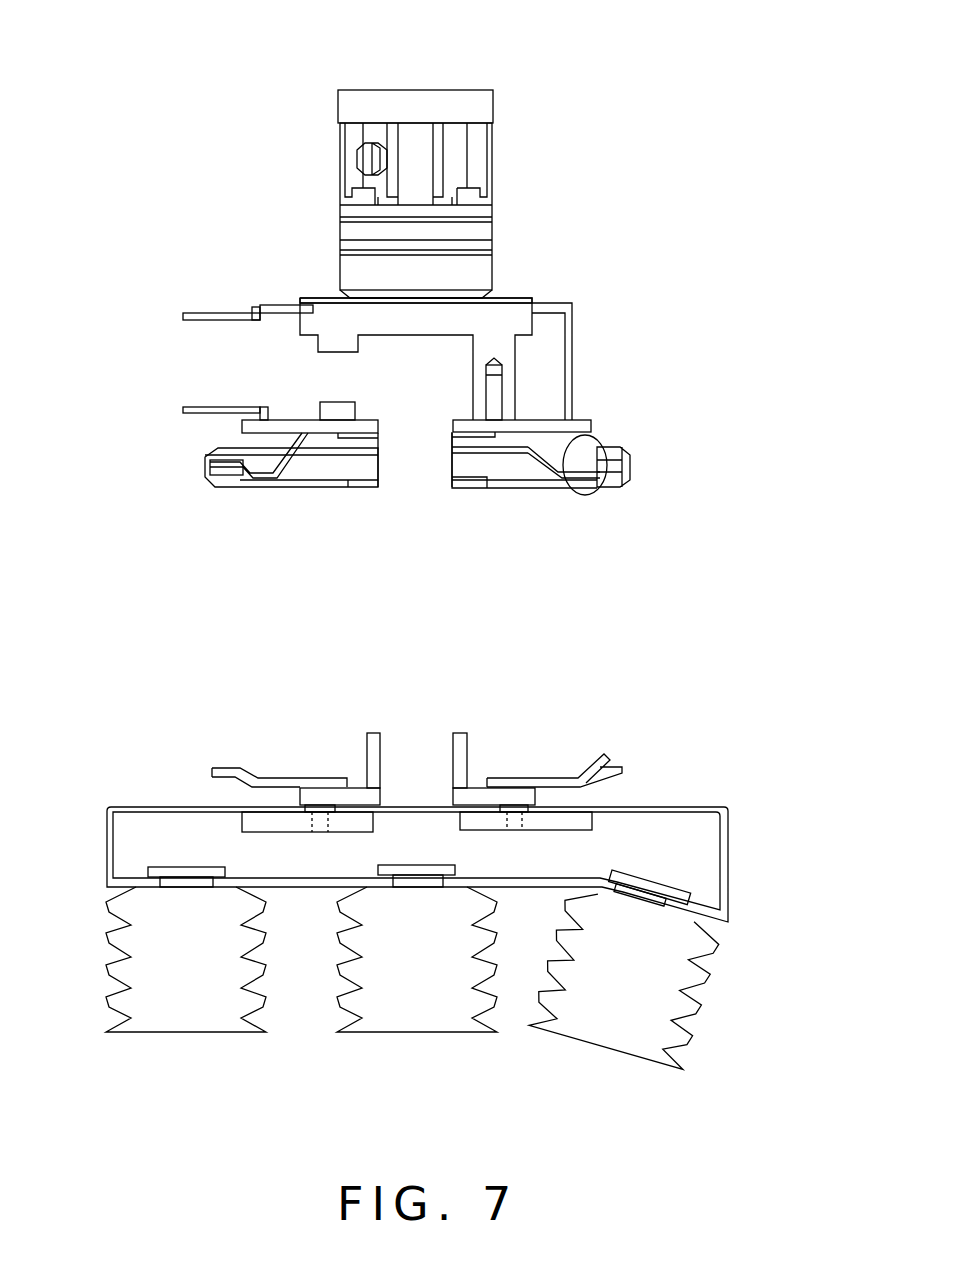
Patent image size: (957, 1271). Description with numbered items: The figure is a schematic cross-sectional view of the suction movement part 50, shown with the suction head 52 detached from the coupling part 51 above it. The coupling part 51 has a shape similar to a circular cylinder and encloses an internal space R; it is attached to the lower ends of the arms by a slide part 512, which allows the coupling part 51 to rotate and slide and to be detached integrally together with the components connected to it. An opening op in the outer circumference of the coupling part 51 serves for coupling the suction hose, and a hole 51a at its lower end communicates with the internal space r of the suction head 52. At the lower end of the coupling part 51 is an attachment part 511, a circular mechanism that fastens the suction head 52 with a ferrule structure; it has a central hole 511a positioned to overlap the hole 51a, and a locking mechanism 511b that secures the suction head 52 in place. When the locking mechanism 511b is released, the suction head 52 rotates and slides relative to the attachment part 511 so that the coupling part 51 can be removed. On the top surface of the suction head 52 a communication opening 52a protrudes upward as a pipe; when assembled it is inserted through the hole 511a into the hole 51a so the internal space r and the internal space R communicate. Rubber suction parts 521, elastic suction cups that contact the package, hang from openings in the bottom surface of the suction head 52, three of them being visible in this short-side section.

The suction movement part 50 is at (660, 84).
The coupling part 51 is at (591, 320).
The attachment part 511 is at (608, 416).
The hole 511a is at (412, 448).
The locking mechanism 511b is at (651, 471).
The slide part 512 is at (530, 282).
The hole 51a is at (381, 417).
The suction head 52 is at (120, 807).
The communication opening 52a is at (375, 755).
The suction part 521 is at (125, 1002).
The opening op is at (158, 323).
The internal space R is at (438, 396).
The internal space r is at (428, 850).